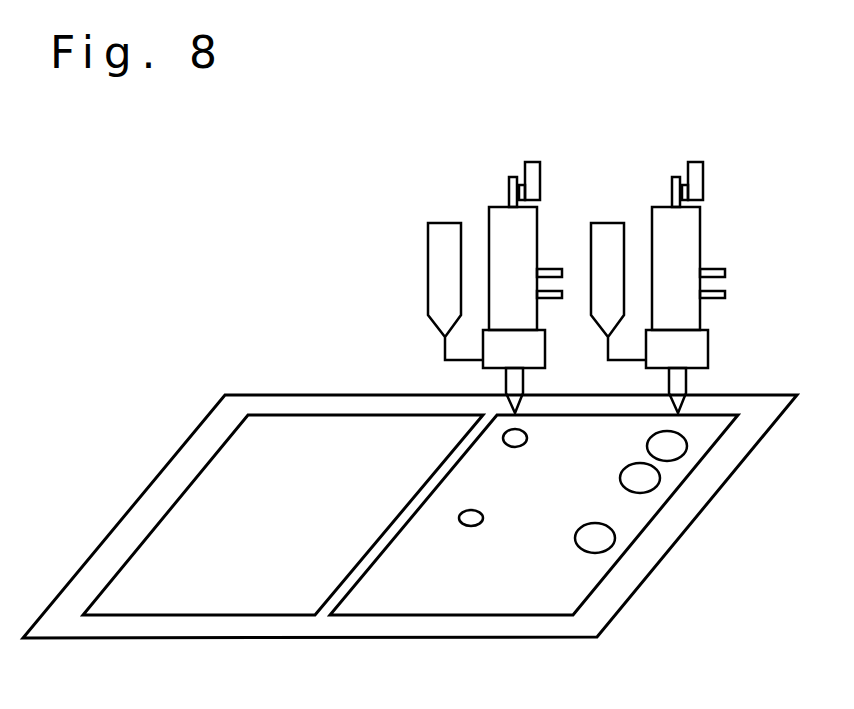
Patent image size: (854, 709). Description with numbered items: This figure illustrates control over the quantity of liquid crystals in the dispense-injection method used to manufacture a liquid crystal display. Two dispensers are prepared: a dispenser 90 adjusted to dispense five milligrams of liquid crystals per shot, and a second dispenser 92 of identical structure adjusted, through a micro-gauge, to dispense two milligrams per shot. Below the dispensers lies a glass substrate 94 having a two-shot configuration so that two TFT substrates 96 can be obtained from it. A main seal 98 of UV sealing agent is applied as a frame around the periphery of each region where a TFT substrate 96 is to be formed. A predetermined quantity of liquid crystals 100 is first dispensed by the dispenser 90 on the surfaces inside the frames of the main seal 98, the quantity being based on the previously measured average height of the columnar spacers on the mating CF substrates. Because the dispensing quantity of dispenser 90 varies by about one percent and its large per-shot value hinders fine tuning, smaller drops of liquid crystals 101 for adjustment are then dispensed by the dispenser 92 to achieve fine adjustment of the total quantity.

The dispenser 90 is at (730, 237).
The dispenser 92 is at (413, 231).
The glass substrate 94 is at (735, 470).
The TFT substrate 96 is at (446, 495).
The main seal 98 is at (617, 567).
The liquid crystals 100 is at (645, 483).
The liquid crystals for adjustment 101 is at (460, 527).